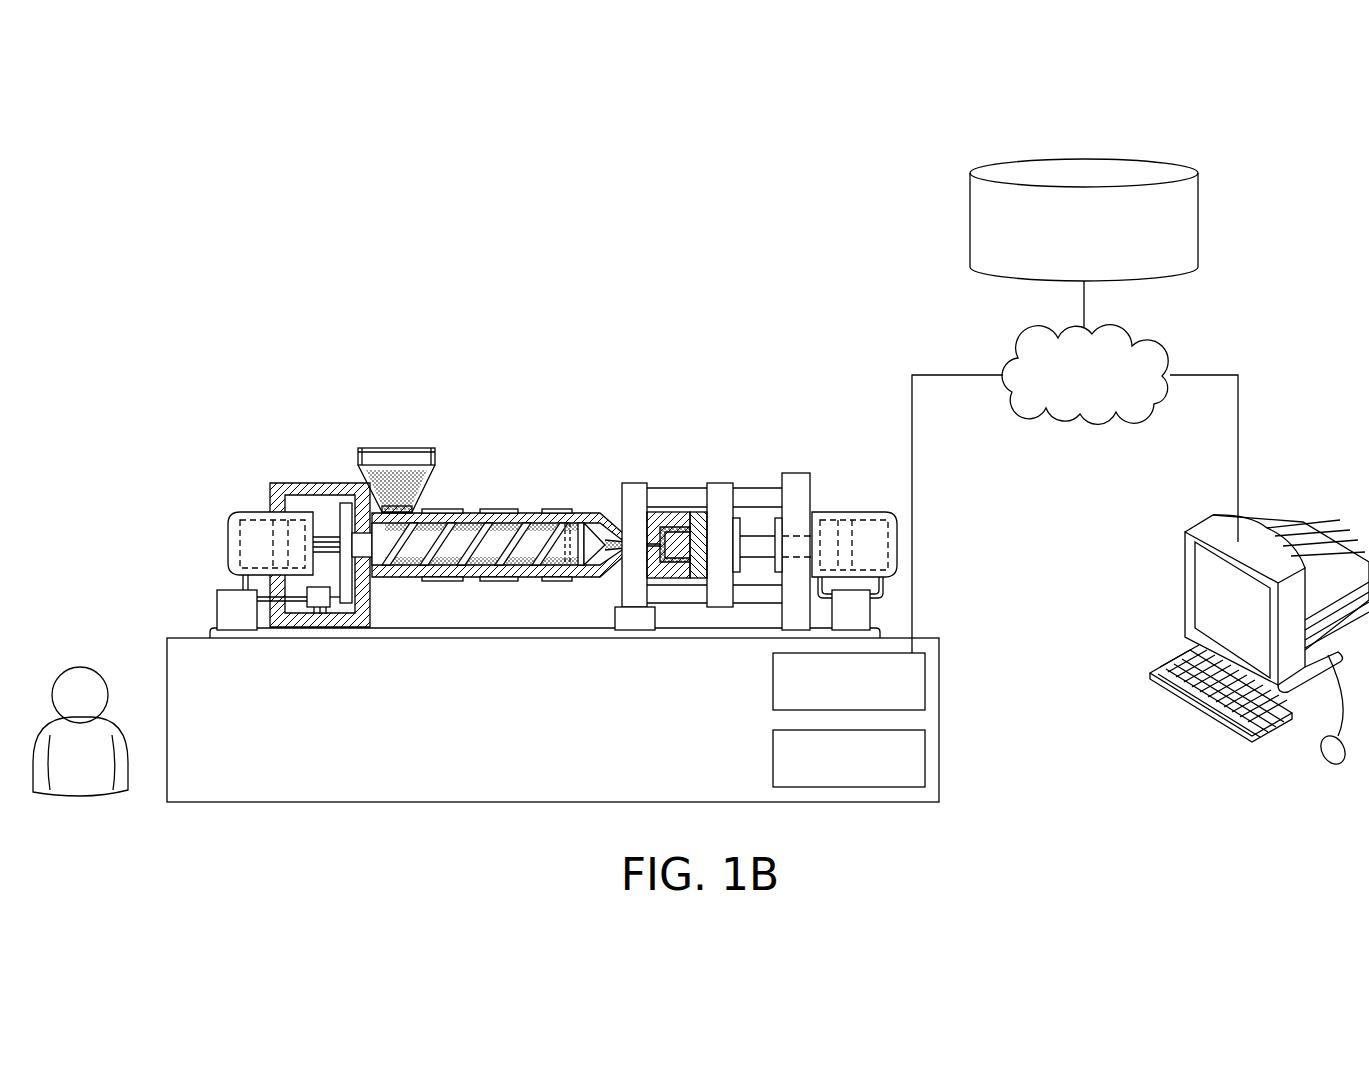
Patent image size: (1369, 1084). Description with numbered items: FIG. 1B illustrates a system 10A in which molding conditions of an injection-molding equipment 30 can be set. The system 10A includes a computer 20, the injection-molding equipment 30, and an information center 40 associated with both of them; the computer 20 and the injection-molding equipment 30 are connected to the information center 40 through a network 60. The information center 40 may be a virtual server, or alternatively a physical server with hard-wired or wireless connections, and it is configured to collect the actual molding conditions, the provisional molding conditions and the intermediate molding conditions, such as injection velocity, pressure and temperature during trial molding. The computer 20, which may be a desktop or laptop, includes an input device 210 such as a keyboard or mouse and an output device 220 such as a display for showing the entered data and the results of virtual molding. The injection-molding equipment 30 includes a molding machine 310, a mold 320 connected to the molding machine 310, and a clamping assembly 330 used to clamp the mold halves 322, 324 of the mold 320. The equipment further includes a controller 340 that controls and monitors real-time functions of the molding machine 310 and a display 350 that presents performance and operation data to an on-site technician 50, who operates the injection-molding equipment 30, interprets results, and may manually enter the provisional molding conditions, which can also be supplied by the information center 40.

The system 10A is at (967, 137).
The computer 20 is at (1233, 585).
The injection-molding equipment 30 is at (592, 587).
The information center 40 is at (1071, 245).
The on-site technician 50 is at (78, 783).
The network 60 is at (1074, 383).
The input device 210 is at (1210, 710).
The output device 220 is at (1183, 583).
The molding machine 310 is at (348, 458).
The mold 320 is at (752, 501).
The mold half 322 is at (660, 512).
The mold half 324 is at (700, 501).
The clamping assembly 330 is at (923, 552).
The controller 340 is at (773, 683).
The display 350 is at (773, 758).